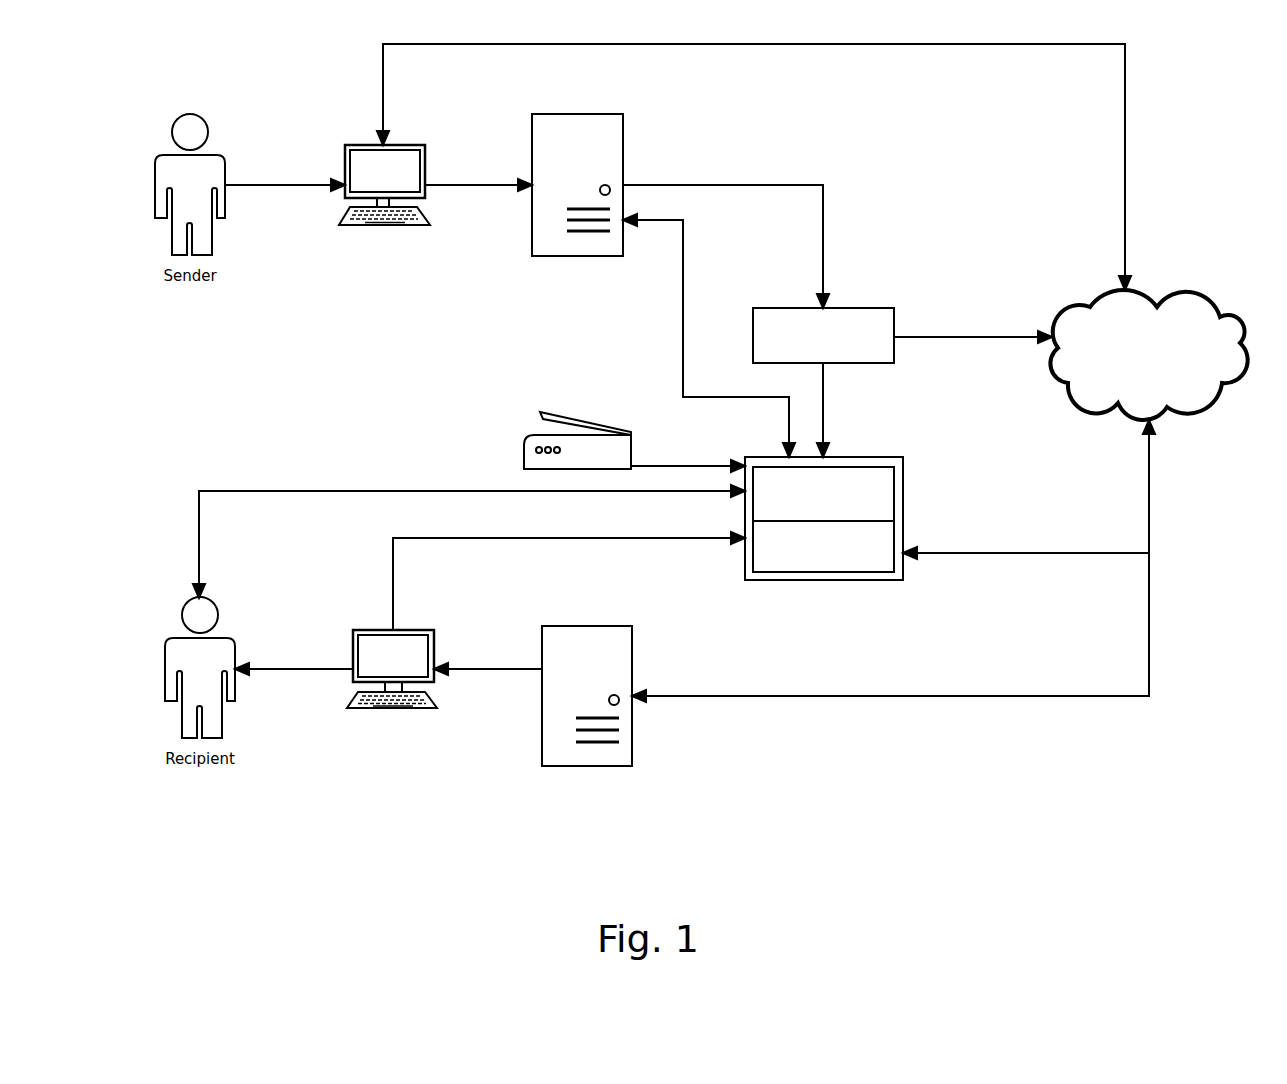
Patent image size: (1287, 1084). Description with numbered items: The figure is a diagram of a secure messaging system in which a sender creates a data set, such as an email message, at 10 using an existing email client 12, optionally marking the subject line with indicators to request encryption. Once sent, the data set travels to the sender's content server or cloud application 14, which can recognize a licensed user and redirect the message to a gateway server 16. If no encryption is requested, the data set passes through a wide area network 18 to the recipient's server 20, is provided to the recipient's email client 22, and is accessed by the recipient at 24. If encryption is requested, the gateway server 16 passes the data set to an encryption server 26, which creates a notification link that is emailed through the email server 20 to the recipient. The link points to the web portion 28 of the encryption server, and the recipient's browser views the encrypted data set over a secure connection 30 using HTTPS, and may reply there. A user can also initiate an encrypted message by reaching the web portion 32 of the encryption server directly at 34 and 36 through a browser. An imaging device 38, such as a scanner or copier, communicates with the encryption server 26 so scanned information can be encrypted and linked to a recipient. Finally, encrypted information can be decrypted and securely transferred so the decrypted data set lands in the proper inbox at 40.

The data set creation point 10 is at (272, 185).
The email client 12 is at (393, 145).
The content server or cloud application 14 is at (580, 114).
The gateway server 16 is at (865, 308).
The wide area network 18 is at (1183, 292).
The recipient's server 20 is at (600, 626).
The recipient's email client 22 is at (410, 630).
The recipient access point 24 is at (297, 669).
The encryption server 26 is at (863, 457).
The web portion of the encryption server 28 is at (773, 467).
The secure connection 30 is at (329, 491).
The web portion of the encryption server 32 is at (868, 573).
The direct access path 34 is at (1125, 158).
The direct access path 36 is at (1000, 553).
The imaging device 38 is at (607, 429).
The inbox placement point 40 is at (684, 394).